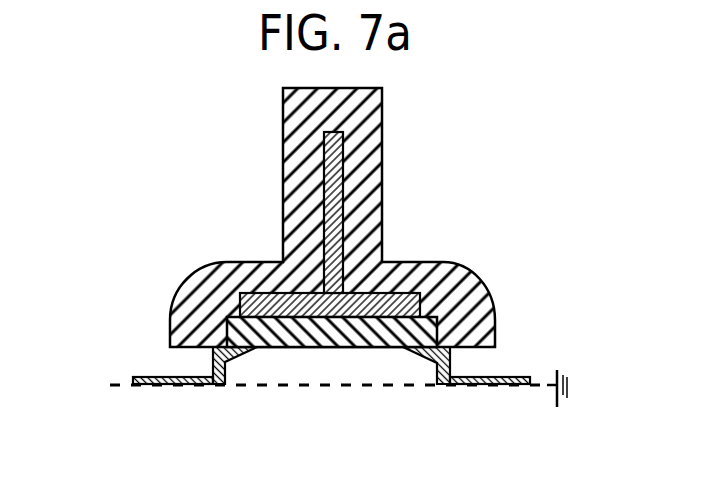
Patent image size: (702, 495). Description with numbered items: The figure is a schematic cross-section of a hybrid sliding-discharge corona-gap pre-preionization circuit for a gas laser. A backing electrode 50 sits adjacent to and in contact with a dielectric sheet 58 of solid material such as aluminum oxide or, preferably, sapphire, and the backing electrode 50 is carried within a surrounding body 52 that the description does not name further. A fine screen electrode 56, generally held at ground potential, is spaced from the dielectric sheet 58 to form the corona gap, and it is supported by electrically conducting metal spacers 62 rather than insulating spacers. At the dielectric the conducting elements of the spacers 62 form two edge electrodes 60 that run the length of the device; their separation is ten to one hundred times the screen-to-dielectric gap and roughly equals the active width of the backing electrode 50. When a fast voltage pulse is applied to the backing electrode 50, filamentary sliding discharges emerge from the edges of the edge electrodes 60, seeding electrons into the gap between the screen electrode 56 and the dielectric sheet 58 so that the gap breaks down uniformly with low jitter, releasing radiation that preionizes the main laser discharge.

The backing electrode 50 is at (347, 150).
The insulating body 52 is at (403, 262).
The screen electrode 56 is at (407, 385).
The dielectric sheet 58 is at (230, 335).
The edge electrodes 60 is at (250, 360).
The metal spacers 62 is at (203, 370).